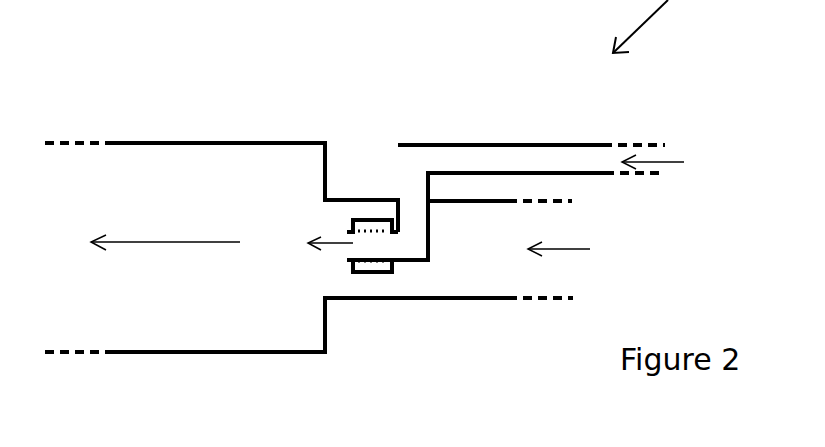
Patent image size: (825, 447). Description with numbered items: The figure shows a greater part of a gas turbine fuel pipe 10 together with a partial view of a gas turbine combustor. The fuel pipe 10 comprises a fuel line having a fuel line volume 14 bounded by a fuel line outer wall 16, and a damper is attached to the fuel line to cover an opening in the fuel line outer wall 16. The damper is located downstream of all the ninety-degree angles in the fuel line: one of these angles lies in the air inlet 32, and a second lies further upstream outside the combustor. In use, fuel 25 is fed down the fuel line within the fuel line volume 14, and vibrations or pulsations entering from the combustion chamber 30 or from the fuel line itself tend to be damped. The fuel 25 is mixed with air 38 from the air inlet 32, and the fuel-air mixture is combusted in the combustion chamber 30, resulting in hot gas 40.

The gas turbine fuel pipe 10 is at (375, 212).
The fuel line volume 14 is at (487, 163).
The fuel line outer wall 16 is at (528, 146).
The fuel 25 is at (655, 163).
The combustion chamber 30 is at (162, 185).
The air inlet 32 is at (477, 272).
The air 38 is at (578, 250).
The hot gas 40 is at (222, 245).